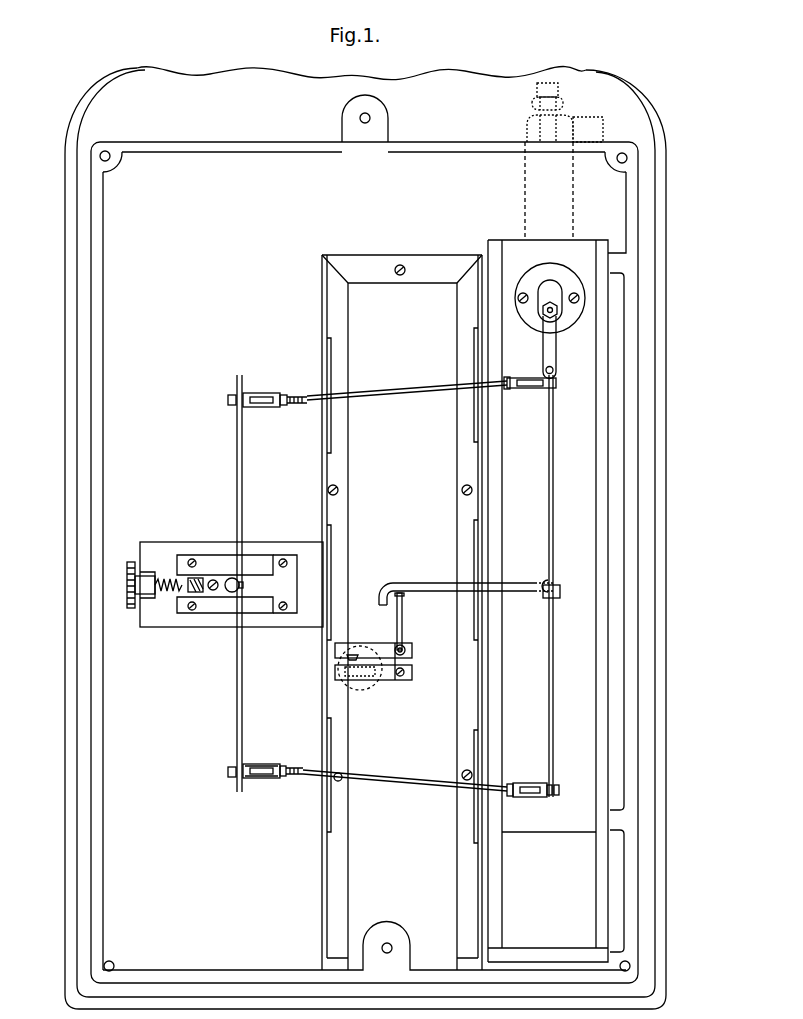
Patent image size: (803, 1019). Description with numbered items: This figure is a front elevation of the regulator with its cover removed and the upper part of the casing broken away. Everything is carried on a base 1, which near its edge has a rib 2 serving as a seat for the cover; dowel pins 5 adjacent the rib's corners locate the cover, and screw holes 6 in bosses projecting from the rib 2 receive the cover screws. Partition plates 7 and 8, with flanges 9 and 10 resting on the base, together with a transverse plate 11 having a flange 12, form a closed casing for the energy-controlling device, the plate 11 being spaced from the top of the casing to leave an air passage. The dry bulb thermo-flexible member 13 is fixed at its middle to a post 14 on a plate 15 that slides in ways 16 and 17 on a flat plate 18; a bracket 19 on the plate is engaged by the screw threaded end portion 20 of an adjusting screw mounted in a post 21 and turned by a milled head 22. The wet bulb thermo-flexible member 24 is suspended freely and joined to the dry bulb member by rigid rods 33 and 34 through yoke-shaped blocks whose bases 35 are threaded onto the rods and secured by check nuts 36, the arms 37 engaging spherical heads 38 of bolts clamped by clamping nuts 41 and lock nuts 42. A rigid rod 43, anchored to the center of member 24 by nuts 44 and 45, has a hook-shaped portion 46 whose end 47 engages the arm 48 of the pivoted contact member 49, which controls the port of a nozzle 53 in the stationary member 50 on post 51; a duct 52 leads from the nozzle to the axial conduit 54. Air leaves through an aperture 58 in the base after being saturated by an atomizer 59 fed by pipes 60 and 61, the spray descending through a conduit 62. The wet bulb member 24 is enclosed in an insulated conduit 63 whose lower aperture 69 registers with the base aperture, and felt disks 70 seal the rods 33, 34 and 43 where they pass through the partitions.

The base 1 is at (668, 494).
The rib 2 is at (641, 718).
The dowel pins 5 is at (104, 966).
The screw holes 6 is at (370, 117).
The plate 7 is at (322, 700).
The plate 8 is at (490, 688).
The flange 9 is at (348, 570).
The flange 10 is at (461, 722).
The transverse plate 11 is at (420, 262).
The flange 12 is at (427, 283).
The dry bulb thermo-flexible member 13 is at (240, 645).
The post 14 is at (230, 578).
The plate 15 is at (262, 615).
The way 16 is at (262, 555).
The way 17 is at (268, 614).
The flat plate 18 is at (212, 627).
The bracket 19 is at (183, 596).
The screw threaded end portion 20 is at (200, 577).
The post 21 is at (148, 600).
The milled head 22 is at (131, 608).
The wet bulb thermo-flexible member 24 is at (554, 522).
The rod 33 is at (404, 389).
The rod 34 is at (398, 780).
The base of yoke-shaped block 35 is at (510, 378).
The check nut 36 is at (509, 390).
The arm 37 is at (262, 396).
The spherical head 38 is at (252, 766).
The clamping nut 41 is at (236, 780).
The lock nut 42 is at (228, 771).
The rigid rod 43 is at (512, 583).
The nut 44 is at (551, 580).
The nut 45 is at (559, 590).
The hook-shaped portion 46 is at (385, 600).
The end 47 is at (385, 605).
The arm 48 is at (403, 616).
The contact member 49 is at (403, 645).
The stationary member 50 is at (398, 680).
The post 51 is at (402, 680).
The duct 52 is at (345, 672).
The nozzle 53 is at (345, 658).
The conduit 54 is at (372, 690).
The aperture 58 is at (622, 885).
The atomizer 59 is at (568, 118).
The pipe 60 is at (549, 82).
The pipe 61 is at (605, 125).
The conduit 62 is at (572, 204).
The conduit 63 is at (590, 352).
The aperture 69 is at (590, 898).
The disks 70 is at (474, 338).